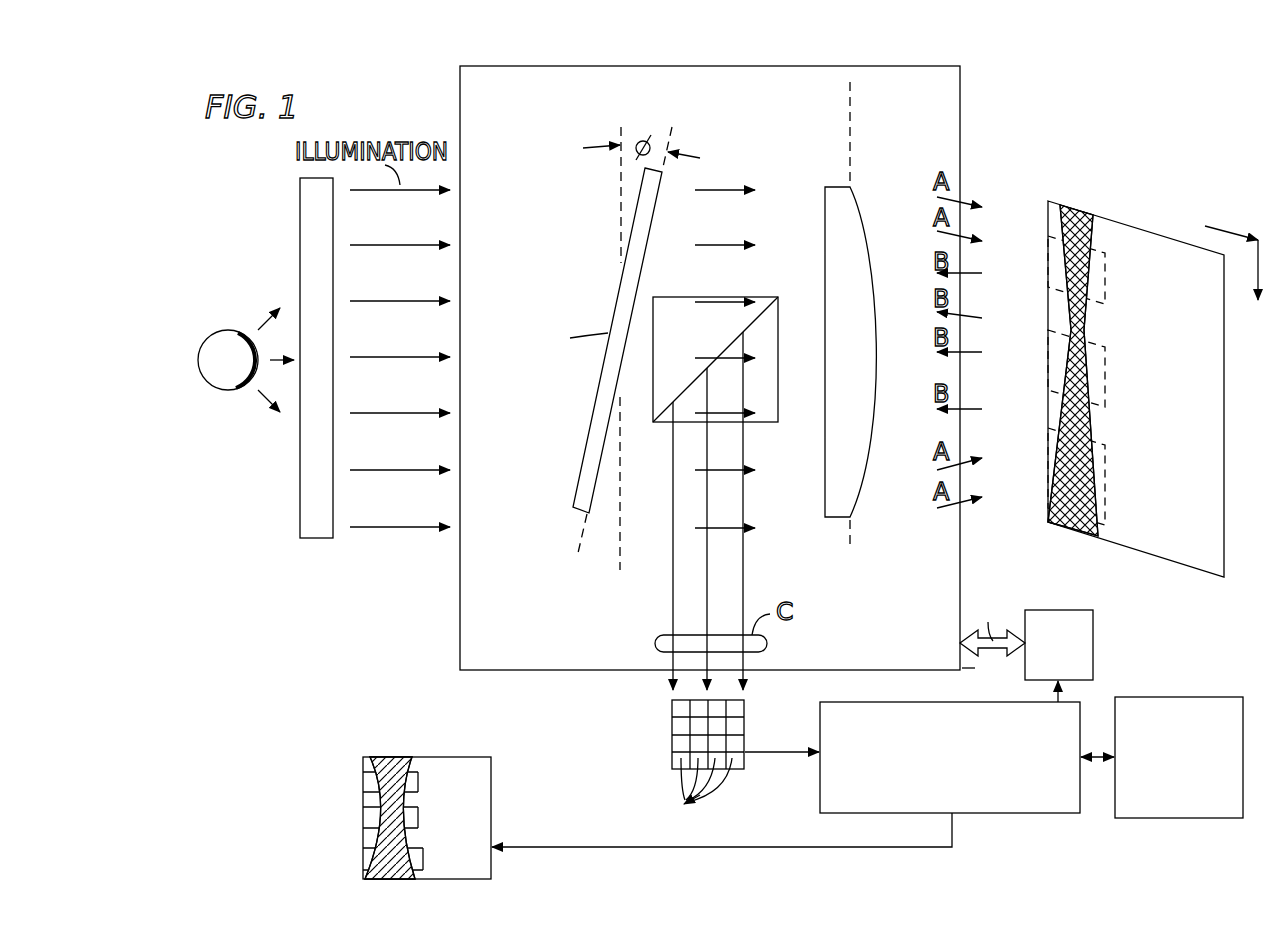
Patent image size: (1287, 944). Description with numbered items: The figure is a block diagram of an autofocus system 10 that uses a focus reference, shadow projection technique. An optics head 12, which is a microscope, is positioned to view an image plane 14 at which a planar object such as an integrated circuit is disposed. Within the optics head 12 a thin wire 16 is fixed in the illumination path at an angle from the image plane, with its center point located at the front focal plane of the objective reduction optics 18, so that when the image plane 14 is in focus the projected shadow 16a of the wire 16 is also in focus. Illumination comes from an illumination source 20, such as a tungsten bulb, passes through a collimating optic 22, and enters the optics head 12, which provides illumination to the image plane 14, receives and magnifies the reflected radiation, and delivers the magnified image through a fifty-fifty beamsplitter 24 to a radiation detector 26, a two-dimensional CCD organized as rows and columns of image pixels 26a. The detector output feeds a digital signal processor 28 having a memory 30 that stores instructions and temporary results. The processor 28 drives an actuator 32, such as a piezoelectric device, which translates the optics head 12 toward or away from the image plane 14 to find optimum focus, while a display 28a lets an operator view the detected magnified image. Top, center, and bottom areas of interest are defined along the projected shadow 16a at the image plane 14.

The autofocus system 10 is at (1032, 130).
The optics head 12 is at (962, 84).
The image plane 14 is at (1170, 560).
The thin wire 16 is at (575, 507).
The projected shadow 16a is at (1077, 215).
The objective reduction optics 18 is at (825, 514).
The illumination source 20 is at (206, 341).
The collimating optic 22 is at (300, 470).
The beamsplitter 24 is at (655, 423).
The radiation detector 26 is at (672, 716).
The image pixels 26a is at (682, 786).
The digital signal processor 28 is at (820, 790).
The display 28a is at (491, 794).
The memory 30 is at (1150, 818).
The actuator 32 is at (1072, 610).